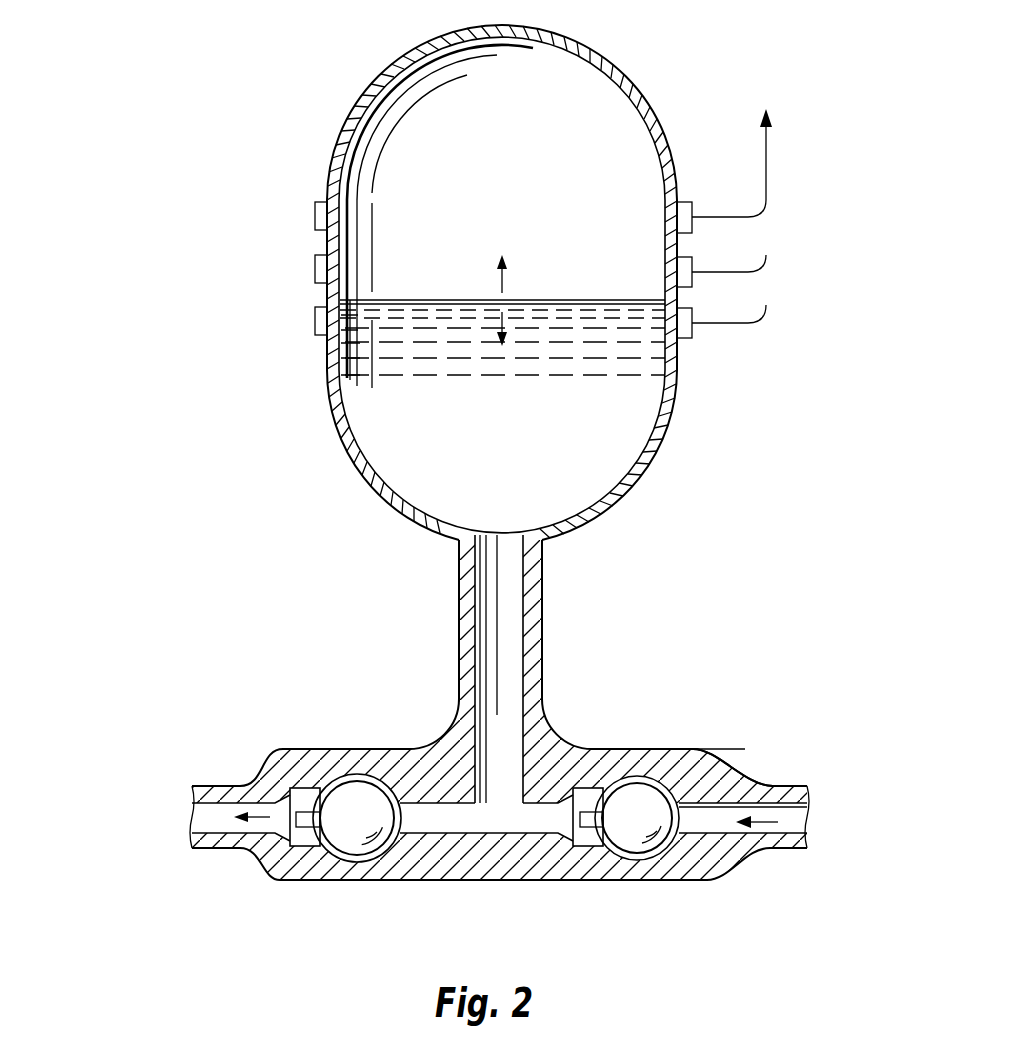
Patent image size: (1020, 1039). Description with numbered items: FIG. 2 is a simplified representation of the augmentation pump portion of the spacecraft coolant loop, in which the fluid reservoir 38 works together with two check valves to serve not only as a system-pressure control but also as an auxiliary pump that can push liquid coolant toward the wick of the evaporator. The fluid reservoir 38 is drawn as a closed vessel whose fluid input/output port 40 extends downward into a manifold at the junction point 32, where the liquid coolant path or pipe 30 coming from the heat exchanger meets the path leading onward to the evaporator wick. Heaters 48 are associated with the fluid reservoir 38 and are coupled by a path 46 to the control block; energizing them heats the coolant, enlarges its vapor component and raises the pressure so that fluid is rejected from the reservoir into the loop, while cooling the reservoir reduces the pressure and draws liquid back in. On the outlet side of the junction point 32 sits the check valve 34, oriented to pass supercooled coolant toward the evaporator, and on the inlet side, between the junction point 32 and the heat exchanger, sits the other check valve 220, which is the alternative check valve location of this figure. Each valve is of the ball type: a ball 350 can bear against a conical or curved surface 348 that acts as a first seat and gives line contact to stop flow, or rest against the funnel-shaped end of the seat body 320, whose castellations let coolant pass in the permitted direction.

The fluid reservoir 38 is at (631, 81).
The fluid input/output port 40 is at (543, 622).
The path 46 is at (767, 172).
The heaters 48 is at (315, 218).
The check valve 34 is at (357, 772).
The check valve 220 is at (638, 774).
The ball 350 is at (697, 760).
The conical or curved surface 348 is at (648, 862).
The seat body 320 is at (592, 846).
The path or pipe 30 is at (781, 788).
The junction point 32 is at (497, 883).